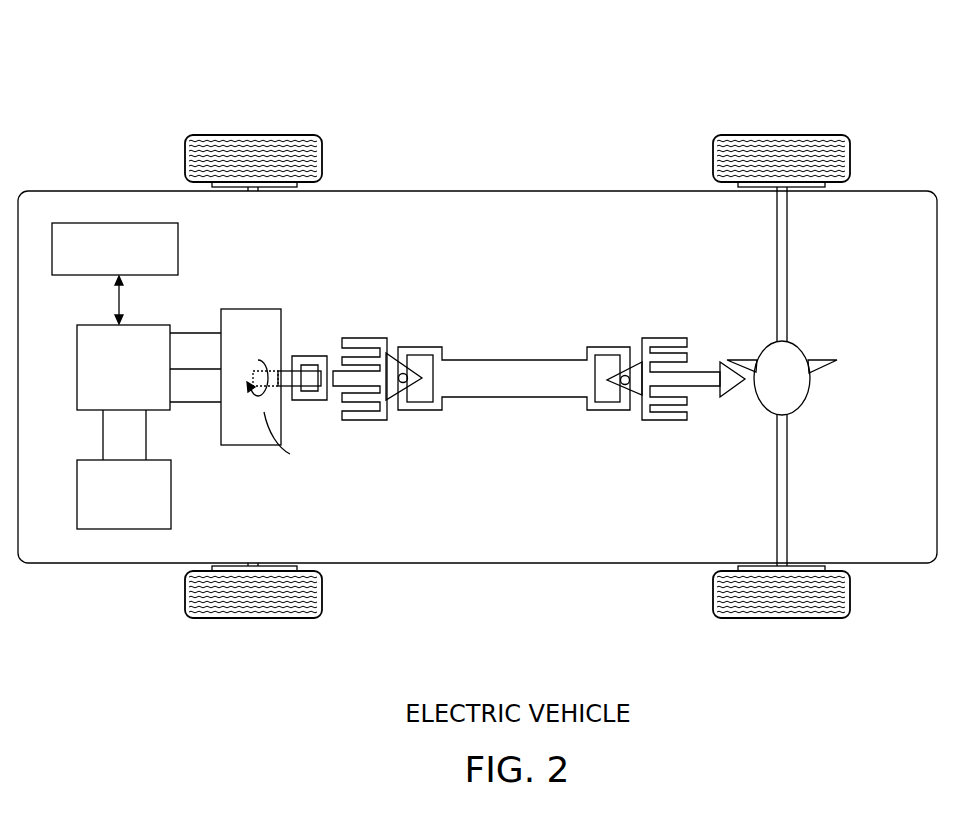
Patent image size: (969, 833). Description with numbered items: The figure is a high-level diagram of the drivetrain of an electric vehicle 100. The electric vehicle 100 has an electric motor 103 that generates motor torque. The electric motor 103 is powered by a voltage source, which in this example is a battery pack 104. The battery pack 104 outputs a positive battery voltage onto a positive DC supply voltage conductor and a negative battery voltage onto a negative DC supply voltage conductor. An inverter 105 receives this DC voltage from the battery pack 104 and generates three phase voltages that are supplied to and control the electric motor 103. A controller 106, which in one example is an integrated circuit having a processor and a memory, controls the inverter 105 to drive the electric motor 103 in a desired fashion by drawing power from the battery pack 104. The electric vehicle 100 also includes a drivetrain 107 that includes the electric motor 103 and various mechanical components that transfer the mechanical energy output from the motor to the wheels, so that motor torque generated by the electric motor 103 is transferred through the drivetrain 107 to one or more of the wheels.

The electric vehicle 100 is at (248, 93).
The electric motor 103 is at (281, 325).
The battery pack 104 is at (124, 494).
The inverter 105 is at (139, 386).
The controller 106 is at (115, 273).
The drivetrain 107 is at (577, 275).